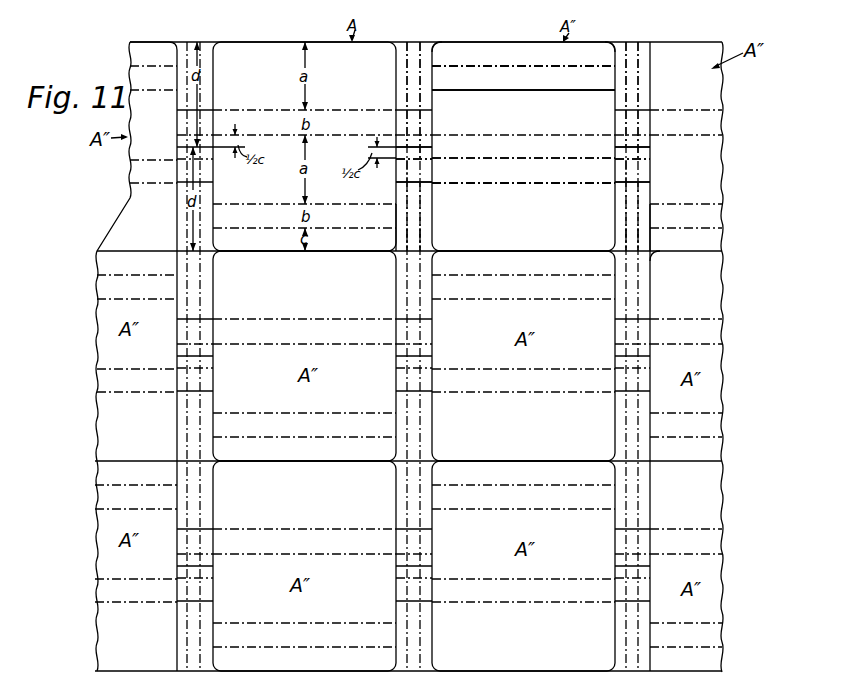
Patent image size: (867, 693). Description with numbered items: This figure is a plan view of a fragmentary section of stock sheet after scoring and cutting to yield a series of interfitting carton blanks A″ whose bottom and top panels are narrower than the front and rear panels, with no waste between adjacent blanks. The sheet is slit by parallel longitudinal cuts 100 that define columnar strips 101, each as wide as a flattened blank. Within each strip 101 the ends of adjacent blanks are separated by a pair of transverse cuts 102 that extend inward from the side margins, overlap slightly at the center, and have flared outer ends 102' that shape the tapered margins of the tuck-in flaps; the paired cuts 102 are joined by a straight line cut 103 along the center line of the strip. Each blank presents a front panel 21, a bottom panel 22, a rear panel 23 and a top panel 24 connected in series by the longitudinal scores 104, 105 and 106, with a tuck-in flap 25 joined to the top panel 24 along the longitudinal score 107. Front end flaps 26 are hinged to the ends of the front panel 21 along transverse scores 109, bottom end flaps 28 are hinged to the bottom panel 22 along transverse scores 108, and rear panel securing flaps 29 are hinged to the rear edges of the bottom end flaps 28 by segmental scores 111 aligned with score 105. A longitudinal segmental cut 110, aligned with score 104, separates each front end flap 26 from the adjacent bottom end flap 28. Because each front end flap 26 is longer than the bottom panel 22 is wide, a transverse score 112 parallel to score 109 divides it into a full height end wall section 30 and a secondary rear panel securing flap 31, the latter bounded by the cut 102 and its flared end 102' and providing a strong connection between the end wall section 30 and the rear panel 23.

The front panel 21 is at (522, 220).
The bottom panel 22 is at (526, 180).
The rear panel 23 is at (529, 133).
The top panel 24 is at (529, 85).
The tuck-in flap 25 is at (530, 61).
The front end flap 26 is at (422, 227).
The bottom end flap 28 is at (402, 177).
The rear panel securing flap 29 is at (426, 152).
The end wall section 30 is at (422, 240).
The secondary rear panel securing flap 31 is at (403, 217).
The longitudinal cut 100 is at (284, 42).
The columnar strip 101 is at (724, 157).
The transverse cut 102 is at (578, 146).
The flared end 102' is at (567, 154).
The straight line cut 103 is at (421, 148).
The longitudinal score 104 is at (556, 187).
The longitudinal score 105 is at (564, 158).
The longitudinal score 106 is at (565, 91).
The longitudinal score 107 is at (570, 56).
The transverse score 108 is at (435, 174).
The transverse score 109 is at (430, 211).
The segmental cut 110 is at (423, 186).
The segmental score 111 is at (421, 162).
The transverse score 112 is at (414, 252).